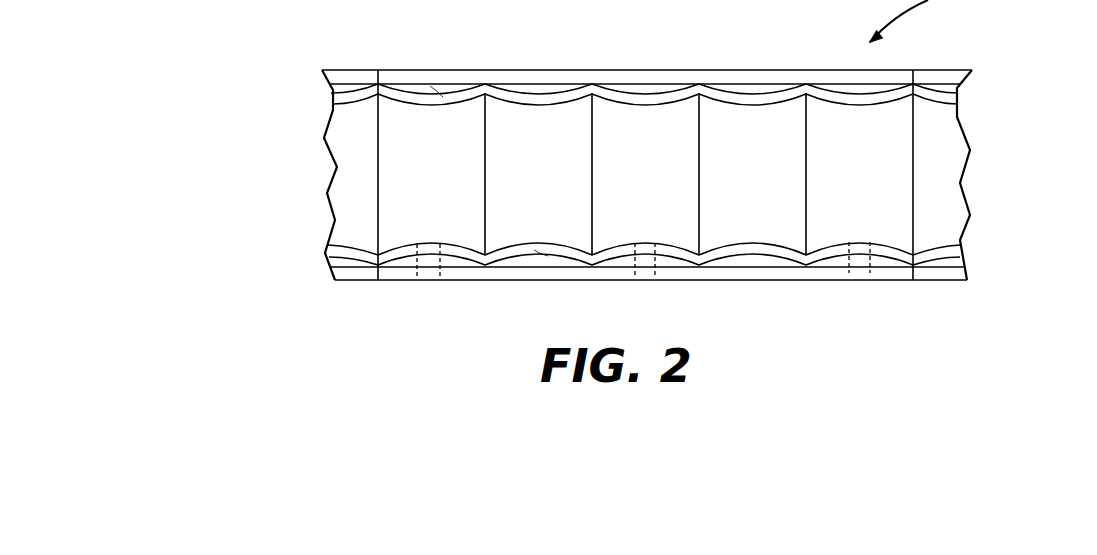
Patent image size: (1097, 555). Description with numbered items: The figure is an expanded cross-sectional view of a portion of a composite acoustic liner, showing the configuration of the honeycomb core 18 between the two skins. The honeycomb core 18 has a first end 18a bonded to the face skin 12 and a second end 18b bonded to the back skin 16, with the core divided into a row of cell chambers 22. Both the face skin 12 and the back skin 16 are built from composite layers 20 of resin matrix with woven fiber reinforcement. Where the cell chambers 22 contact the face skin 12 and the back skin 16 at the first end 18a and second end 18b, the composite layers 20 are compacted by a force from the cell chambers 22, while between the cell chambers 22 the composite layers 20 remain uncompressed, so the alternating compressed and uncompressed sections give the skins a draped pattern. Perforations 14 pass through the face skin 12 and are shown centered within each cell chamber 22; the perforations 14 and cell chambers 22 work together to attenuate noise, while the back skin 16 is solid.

The face skin 12 is at (981, 237).
The perforations 14 is at (428, 275).
The back skin 16 is at (983, 63).
The honeycomb core 18 is at (668, 182).
The first end 18a is at (371, 250).
The second end 18b is at (371, 107).
The composite layers 20 is at (443, 97).
The cell chambers 22 is at (446, 186).